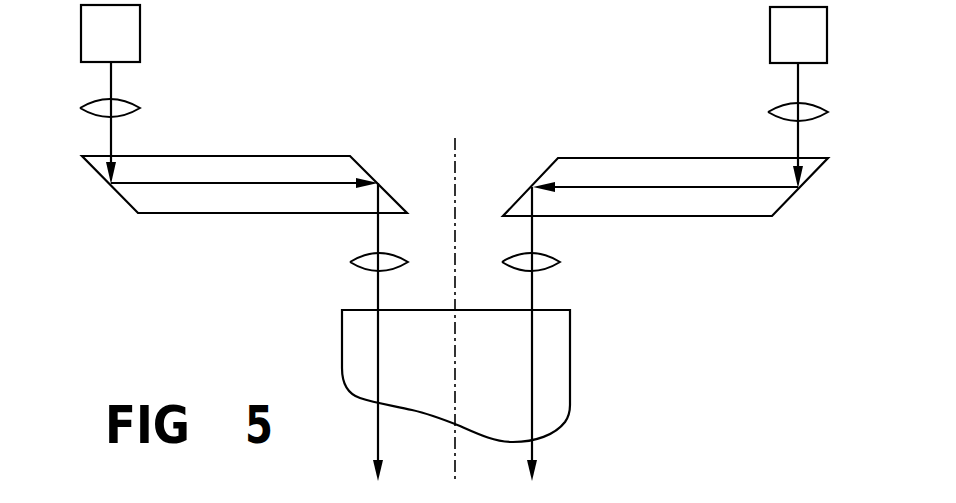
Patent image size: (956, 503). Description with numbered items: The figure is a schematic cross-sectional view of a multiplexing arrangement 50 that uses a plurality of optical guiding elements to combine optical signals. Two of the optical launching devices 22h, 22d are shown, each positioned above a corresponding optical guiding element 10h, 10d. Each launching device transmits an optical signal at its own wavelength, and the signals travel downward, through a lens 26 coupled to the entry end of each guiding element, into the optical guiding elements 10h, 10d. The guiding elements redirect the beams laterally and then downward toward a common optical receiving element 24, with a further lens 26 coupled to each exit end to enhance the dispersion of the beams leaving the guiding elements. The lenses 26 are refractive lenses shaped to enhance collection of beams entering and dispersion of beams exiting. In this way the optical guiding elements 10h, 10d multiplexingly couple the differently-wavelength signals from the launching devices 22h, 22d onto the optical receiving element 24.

The multiplexing arrangement 50 is at (308, 60).
The optical launching device 22h is at (110, 33).
The optical launching device 22d is at (798, 35).
The lens 26 is at (132, 100).
The optical guiding element 10h is at (220, 145).
The optical guiding element 10d is at (690, 145).
The optical receiving element 24 is at (360, 309).